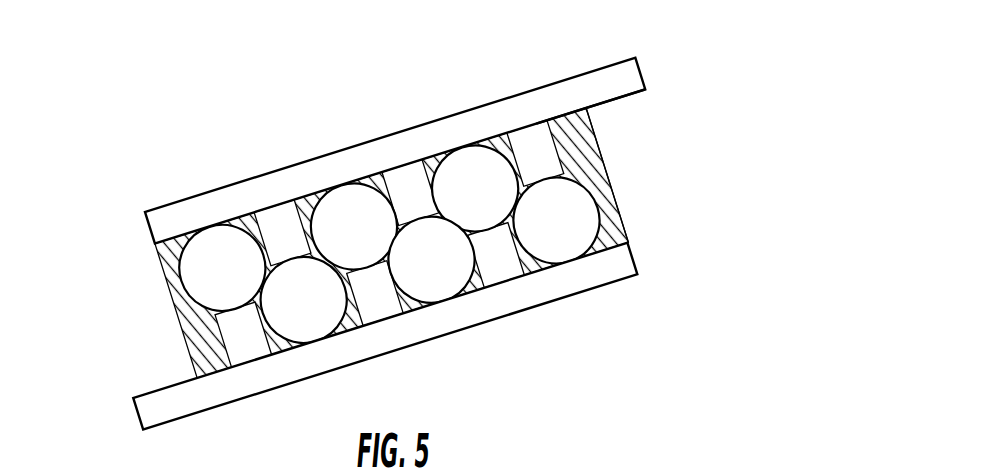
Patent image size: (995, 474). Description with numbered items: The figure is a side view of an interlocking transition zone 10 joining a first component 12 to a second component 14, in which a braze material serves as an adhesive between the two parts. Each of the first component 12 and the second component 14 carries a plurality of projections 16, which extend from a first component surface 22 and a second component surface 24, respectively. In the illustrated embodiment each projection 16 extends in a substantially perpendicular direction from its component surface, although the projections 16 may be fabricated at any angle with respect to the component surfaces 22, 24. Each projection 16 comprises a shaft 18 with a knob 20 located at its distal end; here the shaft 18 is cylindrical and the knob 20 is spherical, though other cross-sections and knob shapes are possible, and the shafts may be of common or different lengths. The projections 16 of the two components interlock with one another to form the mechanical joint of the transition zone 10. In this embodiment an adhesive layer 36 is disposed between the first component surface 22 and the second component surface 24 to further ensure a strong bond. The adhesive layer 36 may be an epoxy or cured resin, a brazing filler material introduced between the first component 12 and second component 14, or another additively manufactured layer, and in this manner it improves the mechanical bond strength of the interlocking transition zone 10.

The interlocking transition zone 10 is at (701, 45).
The first component 12 is at (502, 298).
The second component 14 is at (423, 147).
The projection 16 is at (160, 248).
The shaft 18 is at (237, 338).
The knob 20 is at (208, 270).
The first component surface 22 is at (613, 221).
The second component surface 24 is at (627, 97).
The adhesive layer 36 is at (375, 173).